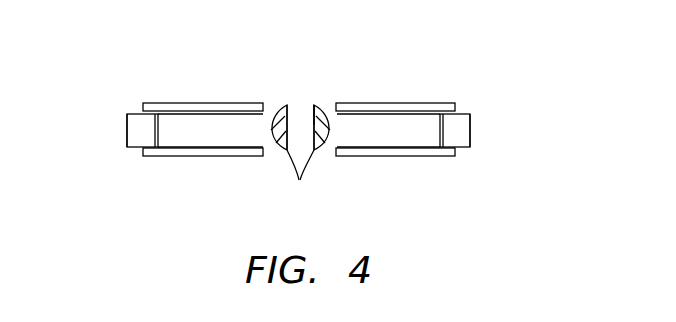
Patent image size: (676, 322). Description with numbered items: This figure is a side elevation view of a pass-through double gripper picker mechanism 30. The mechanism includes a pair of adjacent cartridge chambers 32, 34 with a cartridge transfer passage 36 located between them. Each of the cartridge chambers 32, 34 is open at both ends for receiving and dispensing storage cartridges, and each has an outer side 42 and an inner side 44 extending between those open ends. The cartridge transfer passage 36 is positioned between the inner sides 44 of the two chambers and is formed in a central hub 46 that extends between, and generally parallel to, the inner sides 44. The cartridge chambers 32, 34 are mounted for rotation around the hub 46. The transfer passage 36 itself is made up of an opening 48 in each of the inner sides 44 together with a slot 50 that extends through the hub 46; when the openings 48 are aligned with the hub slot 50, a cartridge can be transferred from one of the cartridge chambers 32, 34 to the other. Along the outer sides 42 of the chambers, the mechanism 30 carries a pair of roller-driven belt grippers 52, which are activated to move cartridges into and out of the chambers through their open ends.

The pass-through double gripper picker mechanism 30 is at (175, 176).
The cartridge chamber 32 is at (192, 123).
The cartridge chamber 34 is at (410, 123).
The cartridge transfer passage 36 is at (315, 92).
The outer side 42 is at (140, 113).
The inner side 44 is at (259, 148).
The central hub 46 is at (317, 112).
The opening 48 is at (299, 180).
The slot 50 is at (300, 118).
The roller-driven belt gripper 52 is at (112, 140).